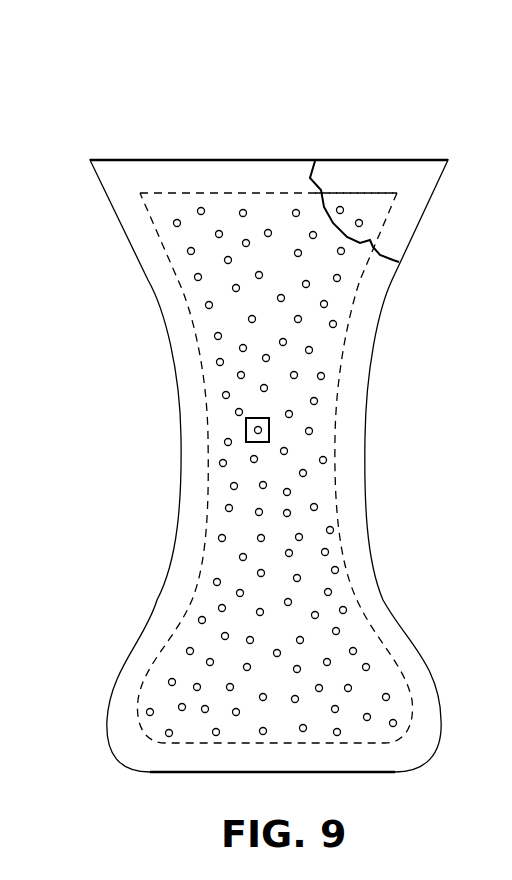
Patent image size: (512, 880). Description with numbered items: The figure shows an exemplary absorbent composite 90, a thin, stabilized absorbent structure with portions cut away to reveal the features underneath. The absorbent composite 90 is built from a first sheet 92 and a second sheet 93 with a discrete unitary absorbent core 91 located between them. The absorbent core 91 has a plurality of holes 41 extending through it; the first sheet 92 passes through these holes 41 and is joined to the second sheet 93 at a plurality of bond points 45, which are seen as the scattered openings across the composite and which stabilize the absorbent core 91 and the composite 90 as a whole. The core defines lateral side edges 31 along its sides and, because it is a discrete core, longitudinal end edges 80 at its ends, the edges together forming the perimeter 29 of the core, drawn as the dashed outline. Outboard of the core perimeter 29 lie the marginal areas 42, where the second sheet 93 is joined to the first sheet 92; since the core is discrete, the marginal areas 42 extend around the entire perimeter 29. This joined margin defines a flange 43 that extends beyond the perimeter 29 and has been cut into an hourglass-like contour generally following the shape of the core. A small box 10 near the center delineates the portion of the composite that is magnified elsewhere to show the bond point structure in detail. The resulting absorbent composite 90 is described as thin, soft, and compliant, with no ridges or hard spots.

The absorbent composite 90 is at (263, 458).
The first sheet 92 is at (127, 193).
The bond points 45 is at (243, 210).
The perimeter 29 is at (333, 160).
The discrete unitary absorbent core 91 is at (372, 204).
The second sheet 93 is at (425, 173).
The lateral side edges 31 is at (392, 203).
The holes 41 is at (362, 223).
The marginal areas 42 is at (355, 388).
The flange 43 is at (352, 465).
The box 10 is at (246, 425).
The longitudinal end edges 80 is at (353, 744).